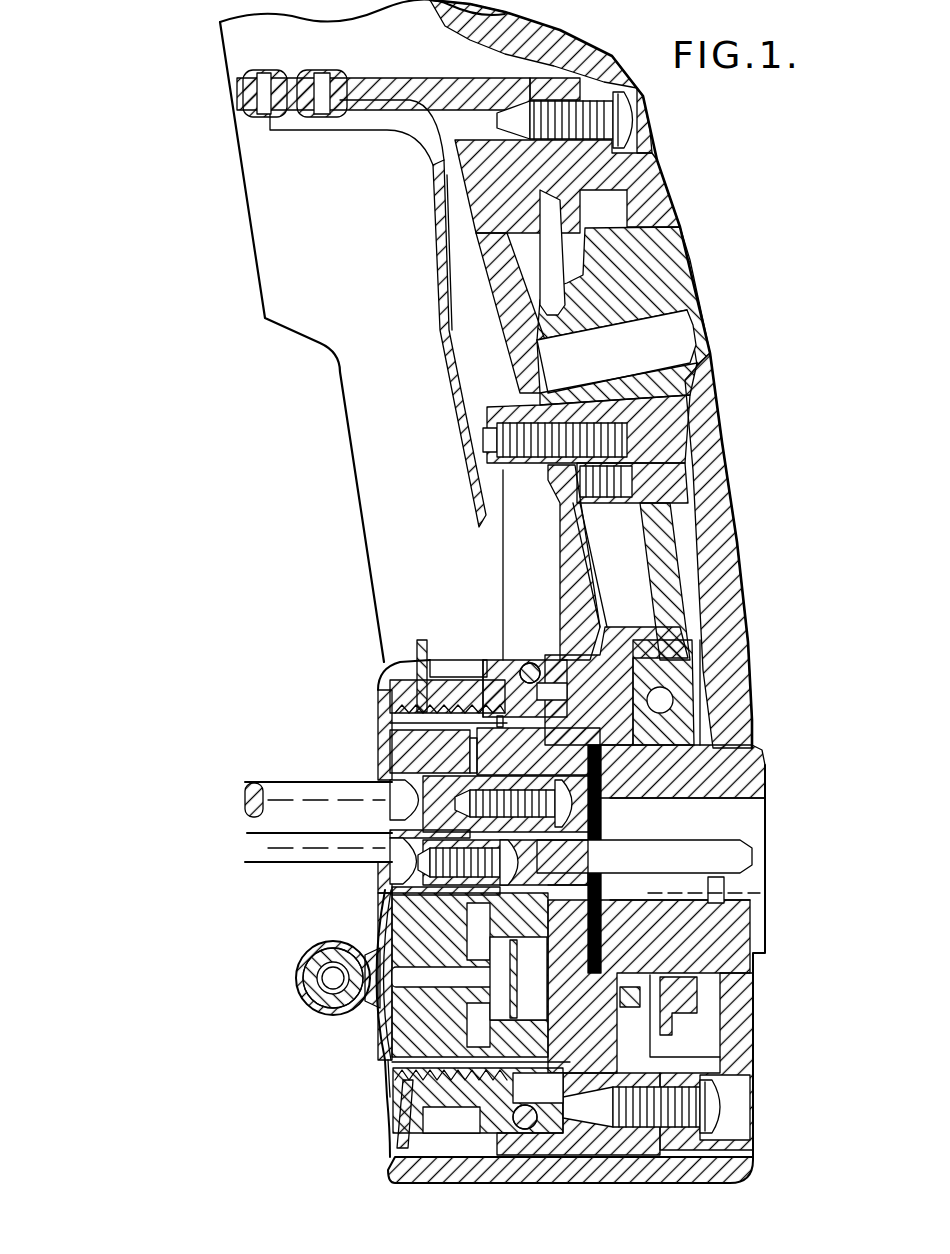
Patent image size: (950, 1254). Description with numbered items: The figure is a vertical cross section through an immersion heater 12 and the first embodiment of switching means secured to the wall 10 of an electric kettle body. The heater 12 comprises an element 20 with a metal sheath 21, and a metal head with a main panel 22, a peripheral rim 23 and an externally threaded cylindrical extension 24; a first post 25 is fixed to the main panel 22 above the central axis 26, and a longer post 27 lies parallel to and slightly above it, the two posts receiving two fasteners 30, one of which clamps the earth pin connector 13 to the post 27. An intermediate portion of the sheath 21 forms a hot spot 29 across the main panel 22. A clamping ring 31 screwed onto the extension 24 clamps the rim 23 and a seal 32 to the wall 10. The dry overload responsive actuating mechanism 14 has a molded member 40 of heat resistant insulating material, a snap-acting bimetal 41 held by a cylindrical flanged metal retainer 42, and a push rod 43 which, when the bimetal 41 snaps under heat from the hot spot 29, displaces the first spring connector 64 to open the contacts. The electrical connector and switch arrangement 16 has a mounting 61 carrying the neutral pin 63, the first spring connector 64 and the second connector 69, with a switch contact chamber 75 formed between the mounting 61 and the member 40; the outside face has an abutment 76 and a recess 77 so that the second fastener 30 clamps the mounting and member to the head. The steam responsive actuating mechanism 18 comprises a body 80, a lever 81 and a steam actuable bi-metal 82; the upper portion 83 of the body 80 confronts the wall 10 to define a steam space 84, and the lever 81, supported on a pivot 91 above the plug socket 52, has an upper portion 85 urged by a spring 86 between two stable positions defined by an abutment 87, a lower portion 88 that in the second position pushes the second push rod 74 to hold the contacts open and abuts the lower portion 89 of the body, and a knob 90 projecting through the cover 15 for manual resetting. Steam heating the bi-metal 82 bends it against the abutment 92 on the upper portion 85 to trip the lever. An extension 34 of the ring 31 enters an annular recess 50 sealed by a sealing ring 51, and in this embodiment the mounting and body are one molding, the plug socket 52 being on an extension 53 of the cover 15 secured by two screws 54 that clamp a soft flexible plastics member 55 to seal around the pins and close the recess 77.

The wall 10 is at (400, 1135).
The immersion heater 12 is at (272, 840).
The earth pin connector 13 is at (732, 862).
The dry overload responsive actuating mechanism 14 is at (393, 1064).
The cover 15 is at (722, 602).
The electrical connector and switch arrangement 16 is at (445, 1128).
The steam responsive actuating mechanism 18 is at (678, 540).
The element 20 is at (310, 990).
The metal sheath 21 is at (298, 960).
The main panel 22 is at (385, 760).
The peripheral rim 23 is at (385, 682).
The externally threaded cylindrical extension 24 is at (425, 682).
The first post 25 is at (395, 875).
The central axis 26 is at (773, 897).
The longer post 27 is at (395, 797).
The hot spot 29 is at (400, 1016).
The fasteners 30 is at (578, 812).
The clamping ring 31 is at (455, 695).
The seal 32 is at (417, 655).
The extension 34 is at (480, 690).
The molded member 40 is at (404, 748).
The bimetal 41 is at (402, 1044).
The metal retainer 42 is at (405, 898).
The push rod 43 is at (430, 975).
The annular recess 50 is at (548, 662).
The sealing ring 51 is at (525, 680).
The plug socket 52 is at (748, 828).
The extension 53 is at (728, 783).
The screws 54 is at (628, 120).
The soft flexible plastics member 55 is at (612, 830).
The mounting 61 is at (500, 1085).
The neutral pin 63 is at (762, 890).
The first spring connector 64 is at (520, 968).
The second connector 69 is at (497, 1020).
The second push rod 74 is at (670, 1018).
The switch contact chamber 75 is at (548, 1005).
The abutment 76 is at (585, 886).
The recess 77 is at (686, 887).
The body 80 is at (618, 650).
The lever 81 is at (730, 692).
The steam actuable bi-metal 82 is at (438, 302).
The upper portion 83 is at (460, 236).
The steam space 84 is at (360, 366).
The upper portion 85 is at (622, 452).
The spring 86 is at (556, 264).
The abutment 87 is at (634, 500).
The lower portion 88 is at (708, 1000).
The lower portion 89 is at (602, 1136).
The knob 90 is at (666, 282).
The pivot 91 is at (676, 712).
The abutment 92 is at (596, 398).